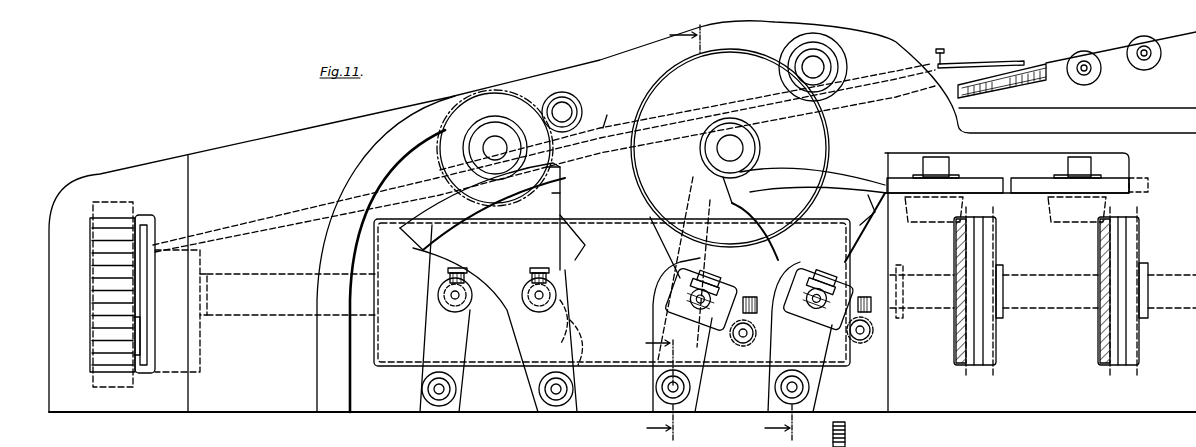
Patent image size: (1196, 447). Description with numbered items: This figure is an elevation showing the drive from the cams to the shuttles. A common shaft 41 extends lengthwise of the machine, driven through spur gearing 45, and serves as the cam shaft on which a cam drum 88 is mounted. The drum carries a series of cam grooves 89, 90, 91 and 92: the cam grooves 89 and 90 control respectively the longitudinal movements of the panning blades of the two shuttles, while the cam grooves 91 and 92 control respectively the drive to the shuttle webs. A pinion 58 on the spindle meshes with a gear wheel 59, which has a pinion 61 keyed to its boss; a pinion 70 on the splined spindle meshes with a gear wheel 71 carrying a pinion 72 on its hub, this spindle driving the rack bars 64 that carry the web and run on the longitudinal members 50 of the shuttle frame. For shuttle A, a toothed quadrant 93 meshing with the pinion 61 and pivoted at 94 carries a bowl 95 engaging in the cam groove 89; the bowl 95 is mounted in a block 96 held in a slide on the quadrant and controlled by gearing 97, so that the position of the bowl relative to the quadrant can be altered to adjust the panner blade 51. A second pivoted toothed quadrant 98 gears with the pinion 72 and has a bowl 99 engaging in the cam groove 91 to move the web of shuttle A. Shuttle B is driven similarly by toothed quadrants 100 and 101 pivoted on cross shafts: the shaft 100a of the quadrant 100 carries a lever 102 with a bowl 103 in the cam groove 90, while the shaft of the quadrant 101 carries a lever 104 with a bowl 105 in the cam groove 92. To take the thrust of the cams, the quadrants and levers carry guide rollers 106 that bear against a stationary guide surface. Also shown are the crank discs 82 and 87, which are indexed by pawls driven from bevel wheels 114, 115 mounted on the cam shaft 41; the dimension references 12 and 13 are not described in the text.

The dimension line / axis 12 is at (721, 232).
The dimension line / axis 13 is at (649, 388).
The common shaft 41 is at (272, 272).
The spur gearing 45 is at (118, 358).
The longitudinal members 50 is at (266, 215).
The panner blade 51 is at (966, 68).
The pinion 58 is at (838, 60).
The gear wheel 59 is at (728, 56).
The pinion 61 is at (700, 151).
The rack bars 64 is at (609, 114).
The pinion 70 is at (562, 92).
The gear wheel 71 is at (505, 92).
The pinion 72 is at (490, 125).
The crank disc 82 is at (1020, 184).
The crank disc 87 is at (962, 185).
The cam drum 88 is at (463, 389).
The cam groove 89 is at (813, 378).
The cam groove 90 is at (655, 242).
The cam groove 91 is at (578, 346).
The cam groove 92 is at (453, 260).
The toothed quadrant 93 is at (873, 200).
The pivot 94 is at (803, 390).
The bowl 95 is at (790, 280).
The block 96 is at (565, 330).
The gearing 97 is at (873, 322).
The second toothed quadrant 98 is at (562, 183).
The bowl 99 is at (548, 294).
The toothed quadrant 100 is at (693, 177).
The shaft 100a is at (657, 387).
The toothed quadrant 101 is at (580, 228).
The lever 102 is at (683, 323).
The bowl 103 is at (688, 283).
The lever 104 is at (433, 340).
The bowl 105 is at (498, 378).
The guide rollers 106 is at (448, 270).
The bevel wheel 114 is at (1099, 250).
The bevel wheel 115 is at (957, 250).